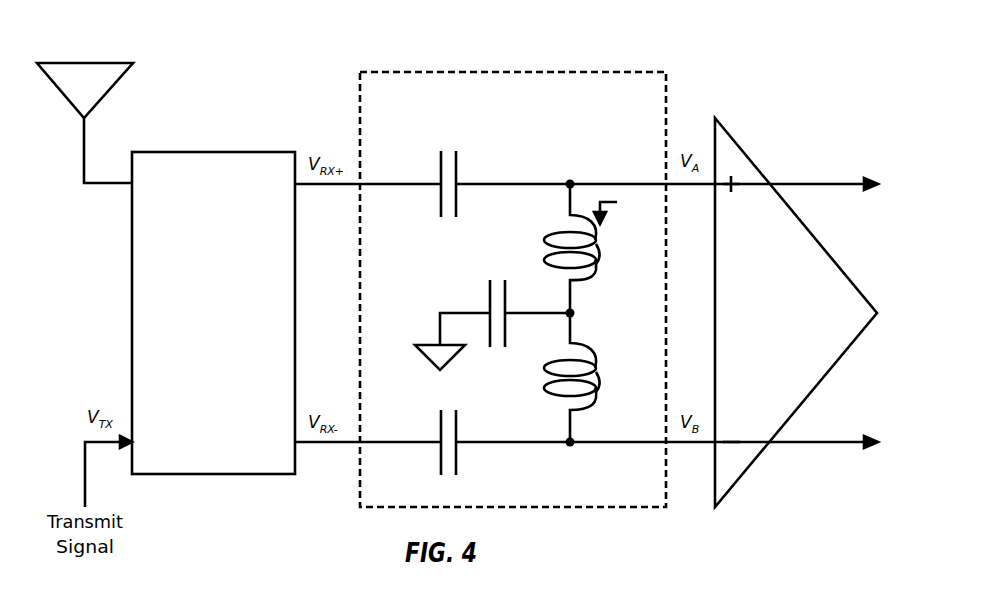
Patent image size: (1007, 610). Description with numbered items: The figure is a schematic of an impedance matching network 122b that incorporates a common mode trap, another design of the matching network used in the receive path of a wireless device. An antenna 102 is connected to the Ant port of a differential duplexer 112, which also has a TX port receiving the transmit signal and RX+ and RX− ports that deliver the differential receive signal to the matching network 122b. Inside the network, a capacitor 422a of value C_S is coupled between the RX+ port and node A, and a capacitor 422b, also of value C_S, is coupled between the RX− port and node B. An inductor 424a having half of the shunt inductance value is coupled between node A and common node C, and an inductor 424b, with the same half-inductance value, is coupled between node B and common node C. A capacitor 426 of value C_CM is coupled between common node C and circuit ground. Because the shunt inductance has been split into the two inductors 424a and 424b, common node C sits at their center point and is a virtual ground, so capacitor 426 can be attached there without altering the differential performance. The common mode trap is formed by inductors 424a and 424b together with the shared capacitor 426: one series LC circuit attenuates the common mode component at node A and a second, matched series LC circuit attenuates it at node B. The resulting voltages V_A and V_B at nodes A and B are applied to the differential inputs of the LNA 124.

The antenna 102 is at (87, 62).
The differential duplexer 112 is at (213, 152).
The impedance matching network 122b is at (508, 72).
The capacitor 422a is at (441, 208).
The capacitor 422b is at (441, 416).
The inductor 424a is at (552, 234).
The inductor 424b is at (552, 392).
The capacitor 426 is at (490, 289).
The LNA 124 is at (821, 246).